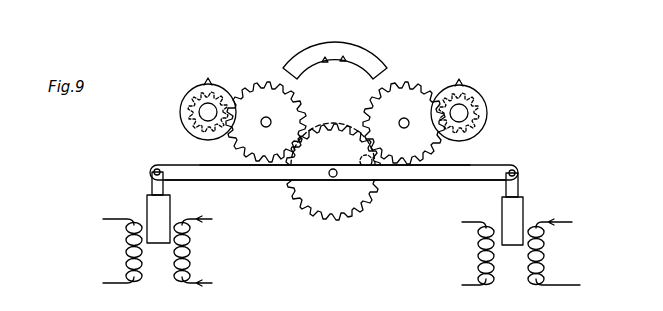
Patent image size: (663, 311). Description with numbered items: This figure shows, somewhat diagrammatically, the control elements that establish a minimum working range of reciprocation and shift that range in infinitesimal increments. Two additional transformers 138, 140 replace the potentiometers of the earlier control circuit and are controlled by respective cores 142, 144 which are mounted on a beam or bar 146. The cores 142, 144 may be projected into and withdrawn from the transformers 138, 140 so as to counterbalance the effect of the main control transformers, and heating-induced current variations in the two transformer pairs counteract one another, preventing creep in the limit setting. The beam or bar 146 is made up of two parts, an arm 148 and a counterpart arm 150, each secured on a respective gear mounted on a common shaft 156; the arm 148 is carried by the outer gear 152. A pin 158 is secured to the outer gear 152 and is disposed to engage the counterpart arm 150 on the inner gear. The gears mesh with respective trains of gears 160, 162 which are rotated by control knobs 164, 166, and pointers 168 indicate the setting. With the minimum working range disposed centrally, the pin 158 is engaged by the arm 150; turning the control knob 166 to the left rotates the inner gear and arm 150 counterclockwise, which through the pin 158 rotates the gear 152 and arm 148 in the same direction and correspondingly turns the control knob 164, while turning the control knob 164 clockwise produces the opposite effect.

The transformer 138 is at (114, 260).
The transformer 140 is at (554, 253).
The core 142 is at (152, 205).
The core 144 is at (522, 208).
The beam or bar 146 is at (428, 190).
The arm 148 is at (237, 172).
The arm 150 is at (481, 177).
The outer gear 152 is at (316, 206).
The shaft 156 is at (336, 178).
The pin 158 is at (363, 158).
The train of gears 160 is at (252, 92).
The train of gears 162 is at (415, 92).
The control knob 164 is at (203, 113).
The control knob 166 is at (466, 113).
The pointers 168 is at (345, 55).